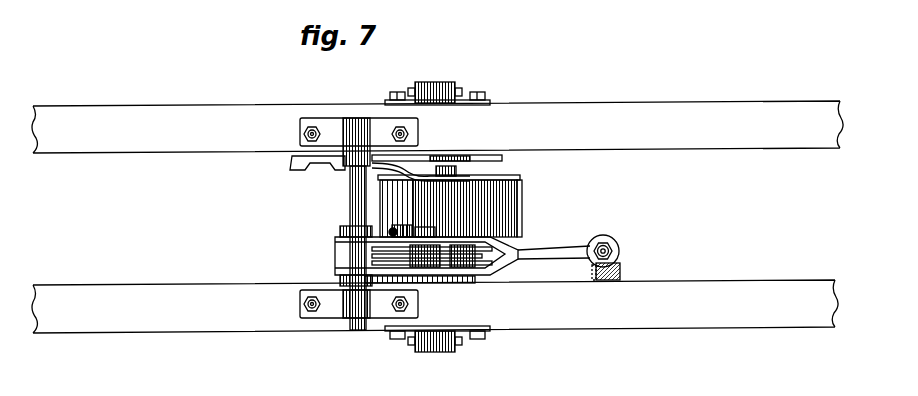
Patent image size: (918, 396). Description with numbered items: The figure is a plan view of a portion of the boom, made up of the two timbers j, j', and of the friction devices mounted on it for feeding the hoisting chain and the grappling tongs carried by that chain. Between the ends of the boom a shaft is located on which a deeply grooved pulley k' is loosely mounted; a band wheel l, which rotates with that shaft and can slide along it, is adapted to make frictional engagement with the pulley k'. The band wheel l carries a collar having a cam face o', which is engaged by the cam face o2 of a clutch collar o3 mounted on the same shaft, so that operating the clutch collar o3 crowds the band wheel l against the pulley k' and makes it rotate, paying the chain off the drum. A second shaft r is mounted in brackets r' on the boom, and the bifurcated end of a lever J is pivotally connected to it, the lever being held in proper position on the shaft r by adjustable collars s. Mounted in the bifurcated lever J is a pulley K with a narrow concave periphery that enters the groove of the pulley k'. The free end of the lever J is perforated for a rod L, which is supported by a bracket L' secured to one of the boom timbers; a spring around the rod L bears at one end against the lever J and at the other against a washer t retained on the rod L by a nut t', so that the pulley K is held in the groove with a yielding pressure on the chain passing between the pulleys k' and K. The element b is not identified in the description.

The timber j is at (437, 127).
The timber j' is at (435, 306).
The bracket r' is at (359, 218).
The shaft r is at (343, 224).
The adjustable collar s is at (342, 232).
The clutch collar o3 is at (438, 156).
The cam face o2 is at (468, 160).
The cam face o' is at (469, 163).
The band wheel l is at (453, 206).
The bobbin b is at (407, 208).
The pulley K is at (378, 255).
The pulley k' is at (436, 260).
The lever J is at (554, 246).
The nut t' is at (597, 246).
The washer t is at (603, 241).
The rod L is at (615, 254).
The bracket L' is at (619, 272).